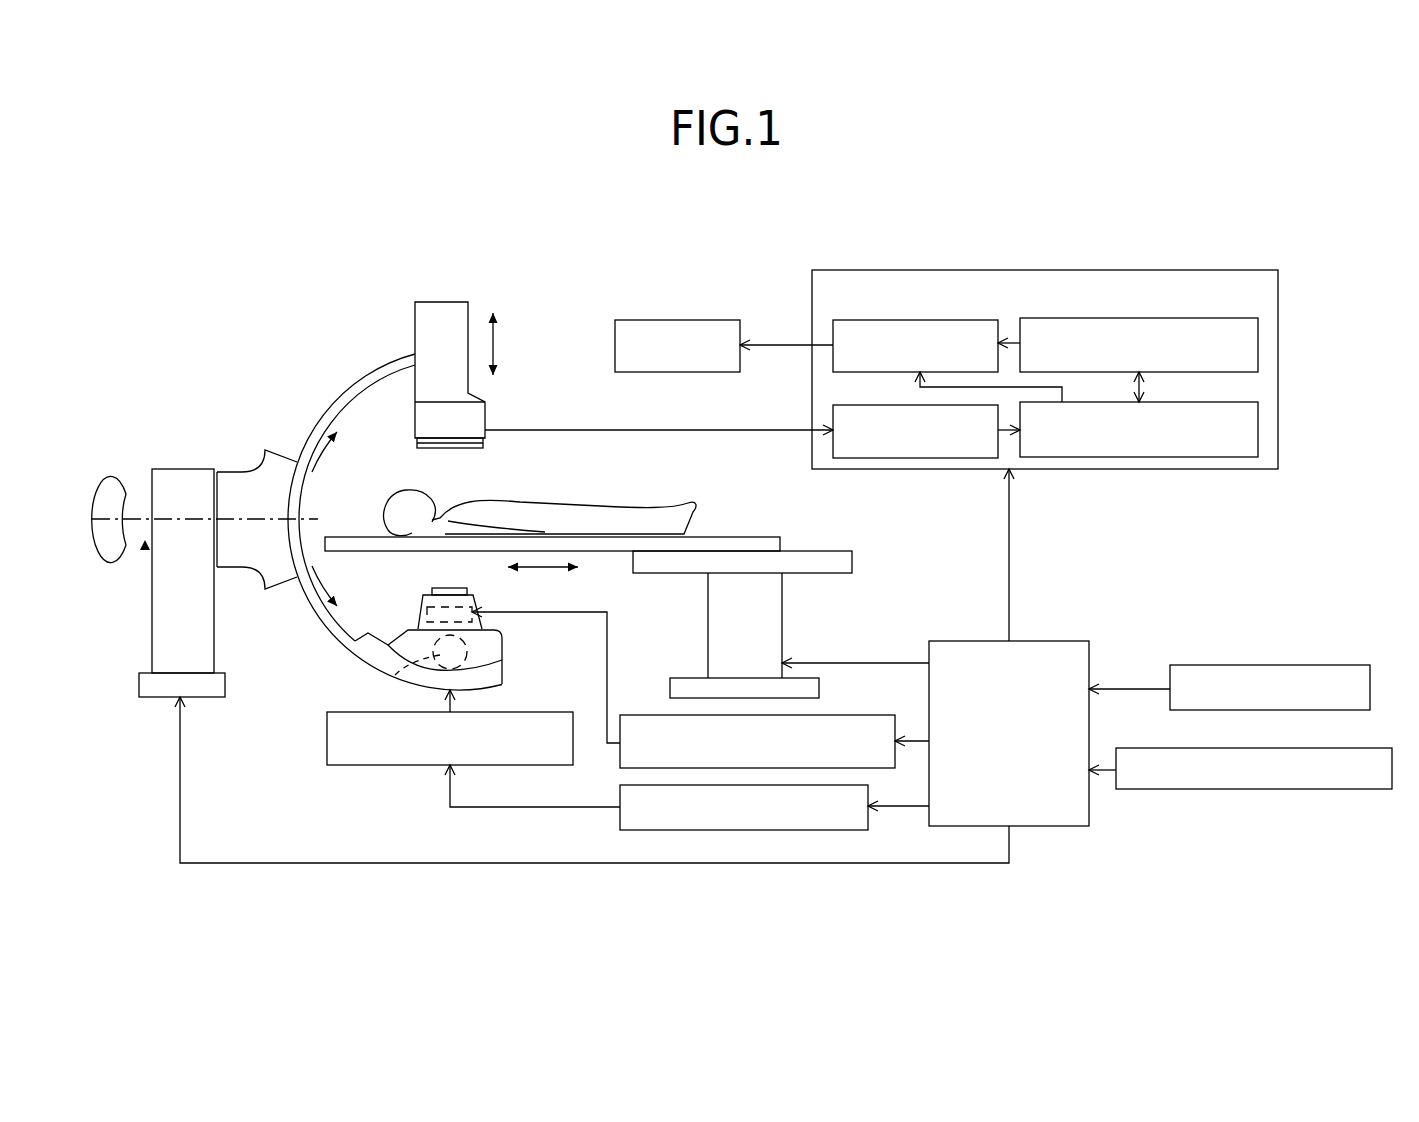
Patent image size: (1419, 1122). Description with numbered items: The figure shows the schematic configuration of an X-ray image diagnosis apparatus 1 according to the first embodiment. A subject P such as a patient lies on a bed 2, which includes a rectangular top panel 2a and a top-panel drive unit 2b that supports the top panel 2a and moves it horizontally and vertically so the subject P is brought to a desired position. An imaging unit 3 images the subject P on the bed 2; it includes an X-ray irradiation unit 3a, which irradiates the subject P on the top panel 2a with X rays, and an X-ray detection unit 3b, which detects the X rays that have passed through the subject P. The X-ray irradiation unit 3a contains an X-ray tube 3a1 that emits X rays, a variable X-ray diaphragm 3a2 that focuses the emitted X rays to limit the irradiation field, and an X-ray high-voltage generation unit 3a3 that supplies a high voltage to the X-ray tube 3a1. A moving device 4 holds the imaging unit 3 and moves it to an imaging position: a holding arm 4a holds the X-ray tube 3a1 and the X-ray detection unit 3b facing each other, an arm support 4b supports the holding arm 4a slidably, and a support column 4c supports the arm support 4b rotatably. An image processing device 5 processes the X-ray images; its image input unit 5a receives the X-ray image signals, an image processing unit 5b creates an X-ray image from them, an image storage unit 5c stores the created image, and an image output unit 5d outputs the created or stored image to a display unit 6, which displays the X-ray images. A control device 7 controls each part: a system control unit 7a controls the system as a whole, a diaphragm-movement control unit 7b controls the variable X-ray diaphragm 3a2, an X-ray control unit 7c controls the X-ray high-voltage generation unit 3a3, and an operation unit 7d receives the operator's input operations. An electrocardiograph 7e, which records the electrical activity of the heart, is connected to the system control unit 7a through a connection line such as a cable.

The X-ray image diagnosis apparatus 1 is at (272, 243).
The bed 2 is at (623, 592).
The top panel 2a is at (722, 537).
The top-panel drive unit 2b is at (717, 620).
The imaging unit 3 is at (450, 559).
The X-ray irradiation unit 3a is at (449, 641).
The X-ray tube 3a1 is at (410, 657).
The variable X-ray diaphragm 3a2 is at (418, 617).
The X-ray high-voltage generation unit 3a3 is at (370, 765).
The X-ray detection unit 3b is at (482, 412).
The moving device 4 is at (297, 515).
The holding arm 4a is at (322, 402).
The arm support 4b is at (235, 478).
The support column 4c is at (183, 473).
The image processing device 5 is at (1047, 341).
The image input unit 5a is at (833, 410).
The image processing unit 5b is at (1258, 420).
The image storage unit 5c is at (1258, 335).
The image output unit 5d is at (833, 325).
The display unit 6 is at (675, 320).
The control device 7 is at (786, 604).
The system control unit 7a is at (1045, 641).
The diaphragm-movement control unit 7b is at (880, 768).
The X-ray control unit 7c is at (868, 822).
The operation unit 7d is at (1250, 665).
The electrocardiograph 7e is at (1248, 790).
The subject P is at (508, 512).